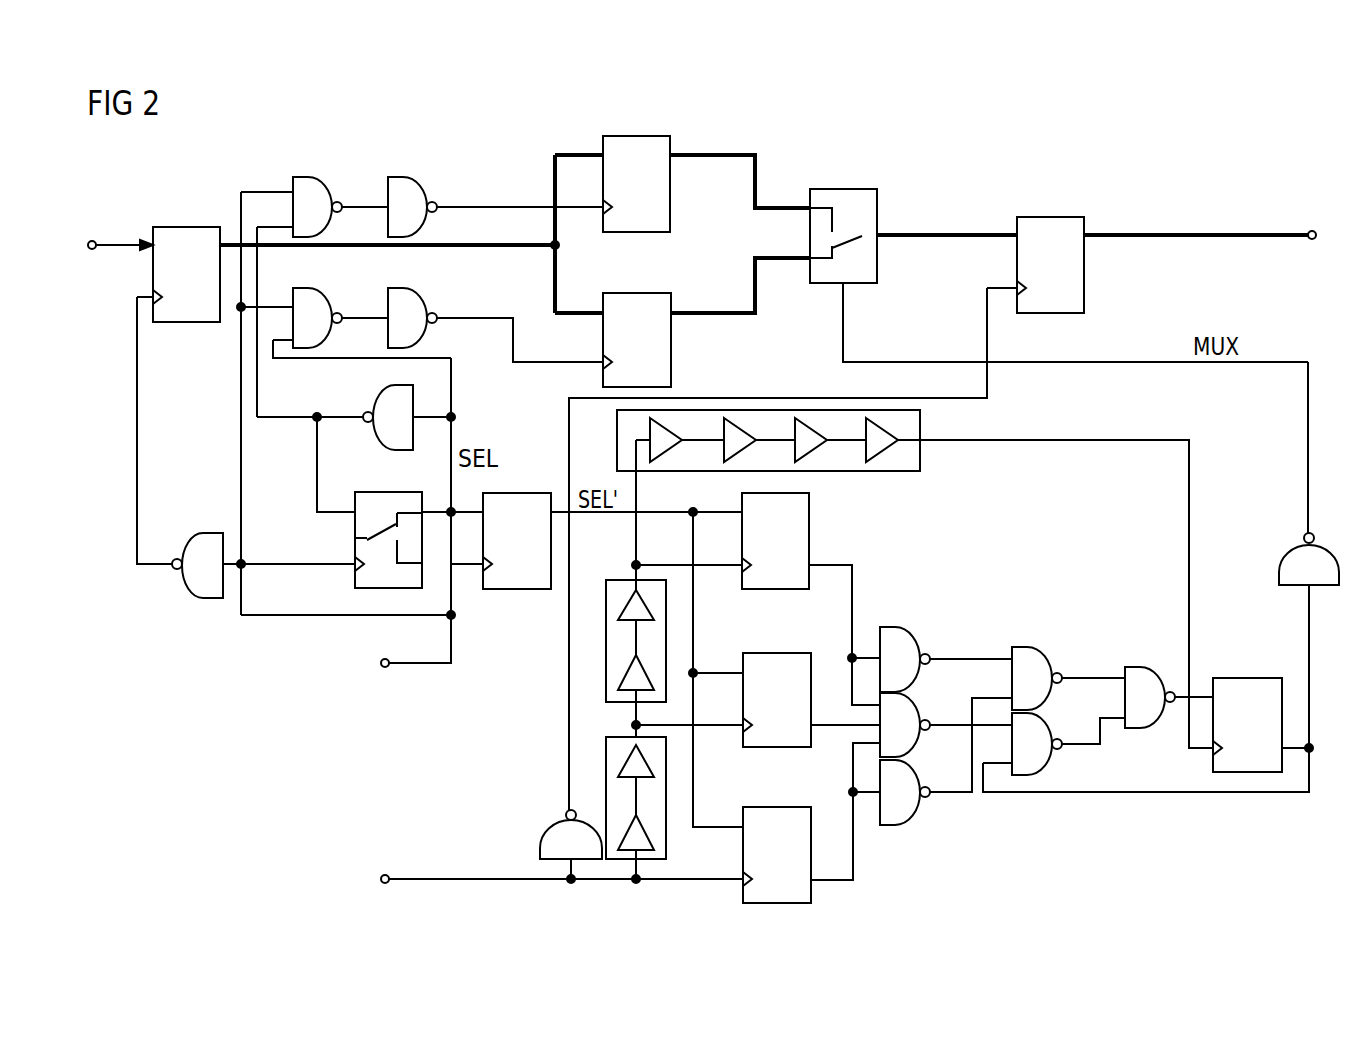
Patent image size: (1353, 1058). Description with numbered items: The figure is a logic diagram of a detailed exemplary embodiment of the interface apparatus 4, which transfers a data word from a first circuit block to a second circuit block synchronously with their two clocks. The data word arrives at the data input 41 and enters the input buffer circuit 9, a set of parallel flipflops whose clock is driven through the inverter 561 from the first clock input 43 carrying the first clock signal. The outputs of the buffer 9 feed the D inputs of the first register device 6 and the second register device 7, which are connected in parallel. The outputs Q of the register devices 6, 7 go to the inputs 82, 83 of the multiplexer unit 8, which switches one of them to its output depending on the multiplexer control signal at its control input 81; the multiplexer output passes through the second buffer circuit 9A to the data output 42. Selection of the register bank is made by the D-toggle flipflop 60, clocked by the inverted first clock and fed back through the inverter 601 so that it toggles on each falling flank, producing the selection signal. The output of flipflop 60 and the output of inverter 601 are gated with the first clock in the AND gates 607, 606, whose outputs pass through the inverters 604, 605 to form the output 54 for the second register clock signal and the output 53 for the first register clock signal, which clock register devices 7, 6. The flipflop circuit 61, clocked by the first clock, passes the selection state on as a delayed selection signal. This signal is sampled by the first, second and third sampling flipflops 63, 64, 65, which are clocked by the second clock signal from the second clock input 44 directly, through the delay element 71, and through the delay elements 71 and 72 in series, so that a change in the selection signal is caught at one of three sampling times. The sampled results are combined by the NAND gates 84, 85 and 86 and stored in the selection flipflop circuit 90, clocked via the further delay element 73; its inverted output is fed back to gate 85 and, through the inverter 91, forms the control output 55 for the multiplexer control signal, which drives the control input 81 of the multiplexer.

The interface apparatus 4 is at (155, 180).
The data input 41 is at (93, 250).
The buffer circuit 9 is at (195, 322).
The logic AND gate 606 is at (305, 177).
The inverter 605 is at (400, 177).
The logic AND gate 607 is at (316, 288).
The inverter 604 is at (436, 277).
The output for selection signal R0 53 is at (470, 207).
The output for signal R1 54 is at (472, 318).
The first register device 6 is at (633, 136).
The second register device 7 is at (634, 293).
The multiplexer unit 8 is at (840, 189).
The multiplexer input 82 is at (808, 206).
The multiplexer input 83 is at (808, 262).
The control input 81 is at (843, 283).
The second buffer circuit 9A is at (1046, 217).
The data output 42 is at (1312, 231).
The inverter 601 is at (377, 402).
The D-toggle flipflop 60 is at (371, 492).
The inverter 561 is at (182, 550).
The flipflop circuit 61 is at (522, 589).
The first clock input 43 is at (388, 668).
The second clock input 44 is at (388, 874).
The delay element 72 is at (616, 580).
The delay element 71 is at (605, 737).
The further delay element 73 is at (920, 462).
The third sampling flipflop 65 is at (809, 512).
The second sampling flipflop 64 is at (772, 653).
The first sampling flipflop 63 is at (772, 807).
The NAND gate 84 is at (1015, 647).
The NAND gate 85 is at (1058, 758).
The further NAND gate 86 is at (1133, 667).
The selection flipflop circuit 90 is at (1245, 678).
The inverter 91 is at (1284, 556).
The control output 55 is at (1308, 449).